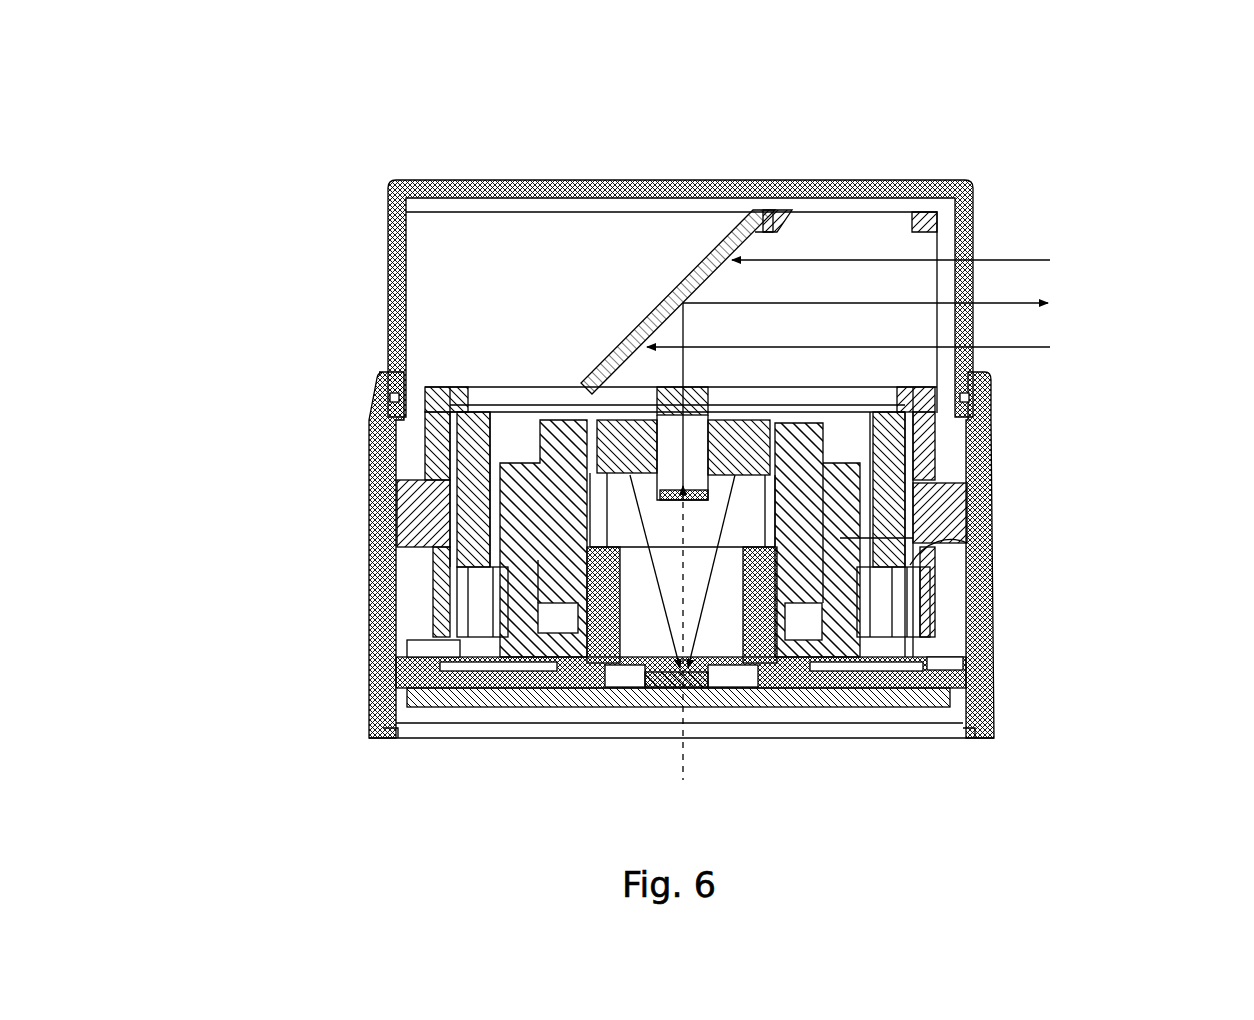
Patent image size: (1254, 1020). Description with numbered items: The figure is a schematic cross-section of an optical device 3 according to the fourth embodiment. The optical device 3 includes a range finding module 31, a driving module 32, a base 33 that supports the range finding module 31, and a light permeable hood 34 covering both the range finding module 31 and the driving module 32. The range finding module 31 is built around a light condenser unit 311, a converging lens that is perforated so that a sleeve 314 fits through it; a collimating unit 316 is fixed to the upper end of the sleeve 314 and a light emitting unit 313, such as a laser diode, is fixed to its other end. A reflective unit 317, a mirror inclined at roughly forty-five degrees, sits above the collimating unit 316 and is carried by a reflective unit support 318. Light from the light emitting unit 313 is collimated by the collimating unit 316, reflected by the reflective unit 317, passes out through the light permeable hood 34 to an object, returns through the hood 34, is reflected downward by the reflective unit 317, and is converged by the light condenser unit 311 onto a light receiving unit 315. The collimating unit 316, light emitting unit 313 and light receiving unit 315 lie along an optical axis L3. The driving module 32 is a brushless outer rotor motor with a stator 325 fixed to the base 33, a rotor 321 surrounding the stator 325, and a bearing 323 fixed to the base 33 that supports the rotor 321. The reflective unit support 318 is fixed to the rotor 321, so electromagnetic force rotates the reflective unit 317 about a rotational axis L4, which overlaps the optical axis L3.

The optical device 3 is at (128, 73).
The range finding module 31 is at (677, 93).
The light condenser unit 311 is at (612, 480).
The light emitting unit 313 is at (657, 498).
The sleeve 314 is at (655, 419).
The light receiving unit 315 is at (690, 707).
The collimating unit 316 is at (660, 387).
The reflective unit 317 is at (668, 298).
The reflective unit support 318 is at (388, 386).
The driving module 32 is at (1160, 432).
The rotor 321 is at (905, 460).
The bearing 323 is at (935, 520).
The stator 325 is at (975, 575).
The base 33 is at (378, 689).
The light permeable hood 34 is at (888, 181).
The optical axis L3 is at (682, 755).
The rotational axis L4 is at (602, 647).